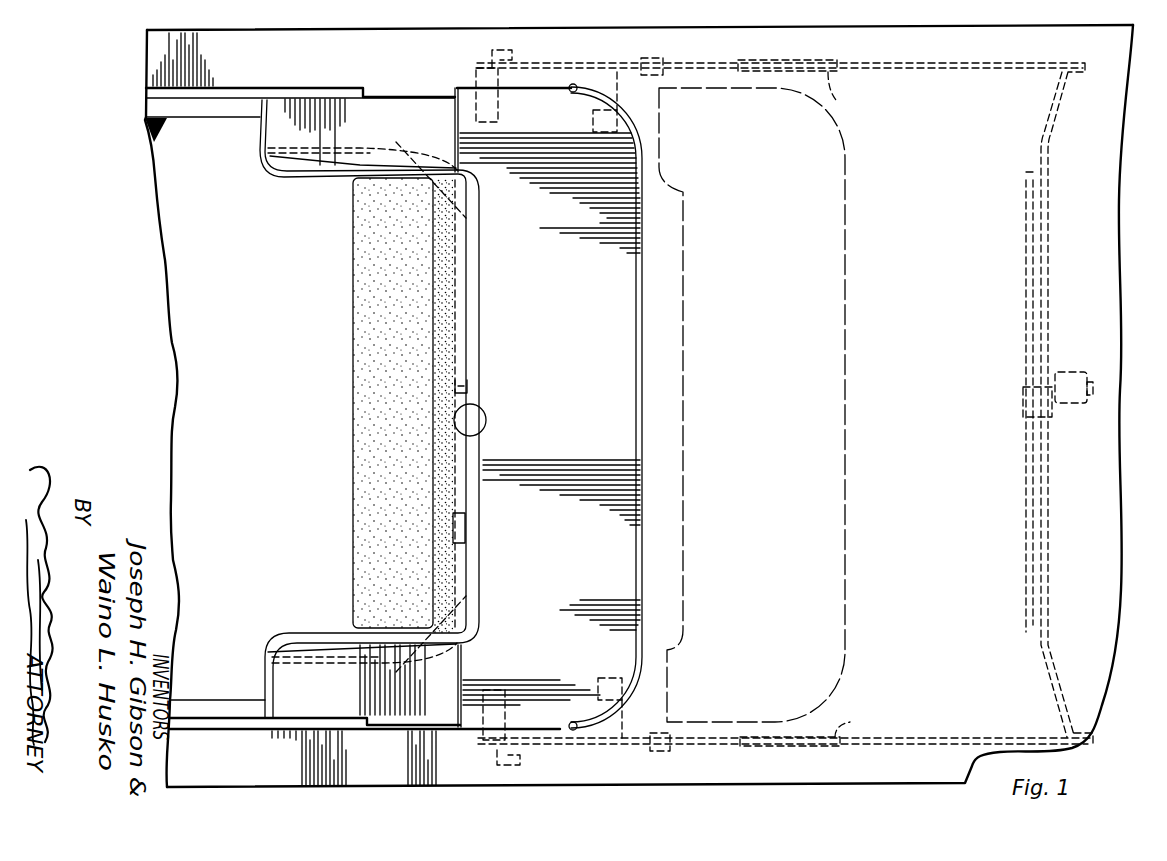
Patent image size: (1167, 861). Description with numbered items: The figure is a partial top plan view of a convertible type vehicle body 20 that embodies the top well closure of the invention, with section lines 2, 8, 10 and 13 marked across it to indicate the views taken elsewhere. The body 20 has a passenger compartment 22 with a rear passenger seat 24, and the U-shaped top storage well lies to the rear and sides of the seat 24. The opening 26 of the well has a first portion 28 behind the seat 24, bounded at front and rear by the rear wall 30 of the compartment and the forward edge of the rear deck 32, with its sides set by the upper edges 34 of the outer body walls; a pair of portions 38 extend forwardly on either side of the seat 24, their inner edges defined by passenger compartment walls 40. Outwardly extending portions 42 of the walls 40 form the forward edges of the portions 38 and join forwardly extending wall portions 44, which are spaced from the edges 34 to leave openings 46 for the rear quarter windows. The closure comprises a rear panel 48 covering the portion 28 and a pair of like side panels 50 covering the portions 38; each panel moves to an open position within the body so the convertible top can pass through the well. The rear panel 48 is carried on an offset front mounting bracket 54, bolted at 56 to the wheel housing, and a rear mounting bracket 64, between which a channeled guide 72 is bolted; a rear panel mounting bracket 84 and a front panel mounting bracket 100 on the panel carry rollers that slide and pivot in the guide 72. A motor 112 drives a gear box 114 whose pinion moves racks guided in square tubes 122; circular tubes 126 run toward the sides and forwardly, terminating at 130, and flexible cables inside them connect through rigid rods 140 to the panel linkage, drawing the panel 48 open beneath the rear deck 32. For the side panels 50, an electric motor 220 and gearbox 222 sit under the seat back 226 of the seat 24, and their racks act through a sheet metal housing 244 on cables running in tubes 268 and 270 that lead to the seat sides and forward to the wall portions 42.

The convertible type vehicle body 20 is at (1097, 424).
The passenger compartment 22 is at (200, 435).
The rear passenger seat 24 is at (357, 506).
The opening of the well 26 is at (754, 405).
The first portion of the opening 28 is at (638, 574).
The rear wall of the passenger compartment 30 is at (475, 533).
The rear deck 32 is at (1100, 238).
The upper edges of the outer body walls 34 is at (611, 413).
The side portions of the opening 38 is at (237, 90).
The passenger compartment walls 40 is at (403, 409).
The outwardly extending wall portions 42 is at (372, 409).
The forwardly extending wall portions 44 is at (154, 140).
The openings 46 is at (145, 93).
The rear panel 48 is at (629, 407).
The side panels 50 is at (403, 145).
The front mounting bracket 54 is at (513, 46).
The bolts 56 is at (717, 38).
The rear mounting bracket 64 is at (653, 56).
The channeled guide 72 is at (807, 60).
The rear panel mounting bracket 84 is at (622, 96).
The front panel mounting bracket 100 is at (500, 107).
The motor 112 is at (1072, 373).
The gear box 114 is at (1023, 407).
The square tube 122 is at (1077, 300).
The circular tube 126 is at (1005, 63).
The terminating end of the circular tube 130 is at (840, 730).
The rigid rod 140 is at (813, 73).
The electric motor 220 is at (487, 420).
The gearbox 222 is at (468, 390).
The seat back 226 is at (450, 447).
The sheet metal housing 244 is at (470, 522).
The tubes 268 is at (462, 214).
The tubes 270 is at (379, 160).
The section line 2 is at (426, 158).
The section line 8 is at (319, 66).
The section line 10 is at (472, 62).
The section line 13 is at (470, 358).